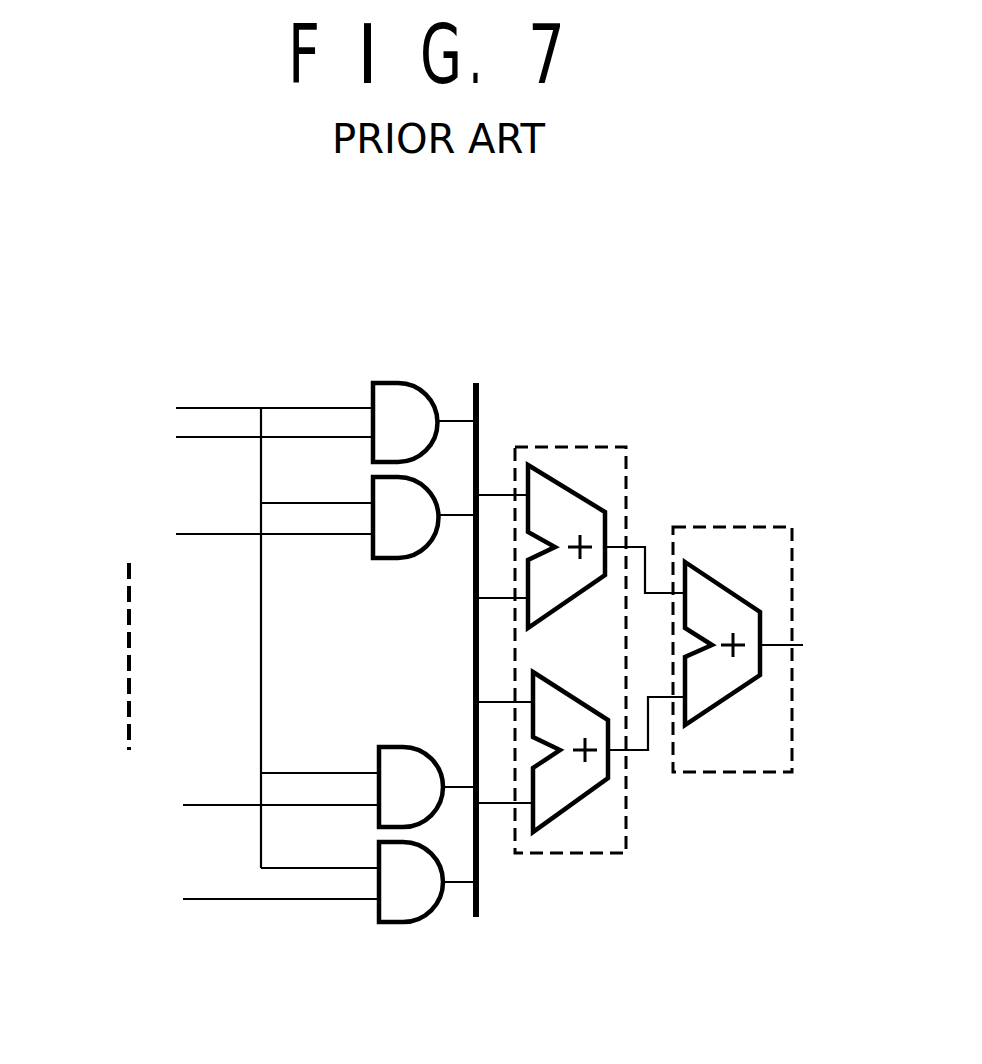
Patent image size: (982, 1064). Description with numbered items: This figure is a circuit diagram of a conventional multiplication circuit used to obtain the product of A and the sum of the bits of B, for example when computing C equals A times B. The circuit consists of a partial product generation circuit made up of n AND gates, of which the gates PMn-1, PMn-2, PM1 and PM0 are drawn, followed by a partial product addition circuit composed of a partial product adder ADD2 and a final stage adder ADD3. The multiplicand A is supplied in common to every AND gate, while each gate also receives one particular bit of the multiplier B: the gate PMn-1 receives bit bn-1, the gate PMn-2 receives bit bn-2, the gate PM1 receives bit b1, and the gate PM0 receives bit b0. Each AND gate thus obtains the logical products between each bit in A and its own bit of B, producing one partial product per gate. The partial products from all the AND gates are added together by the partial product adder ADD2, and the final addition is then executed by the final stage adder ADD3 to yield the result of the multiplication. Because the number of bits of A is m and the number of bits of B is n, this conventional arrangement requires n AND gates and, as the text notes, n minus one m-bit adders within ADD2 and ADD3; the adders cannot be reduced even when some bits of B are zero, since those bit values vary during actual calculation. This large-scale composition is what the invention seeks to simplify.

The AND gate PMn-1 is at (390, 383).
The AND gate PMn-2 is at (390, 558).
The AND gate PM1 is at (390, 747).
The AND gate PM0 is at (395, 922).
The partial product adder ADD2 is at (580, 447).
The final stage adder ADD3 is at (748, 525).
The multiplicand A is at (242, 408).
The bit n-1 of B bn-1 is at (224, 439).
The bit n-2 of B bn-2 is at (224, 533).
The bit 1 of B b1 is at (247, 799).
The bit 0 of B b0 is at (247, 894).